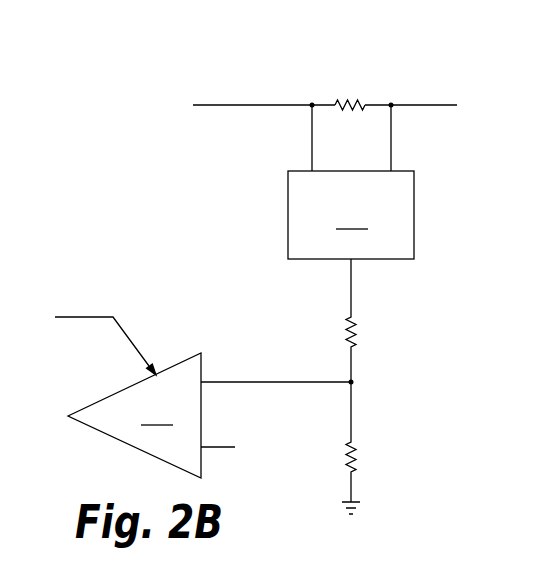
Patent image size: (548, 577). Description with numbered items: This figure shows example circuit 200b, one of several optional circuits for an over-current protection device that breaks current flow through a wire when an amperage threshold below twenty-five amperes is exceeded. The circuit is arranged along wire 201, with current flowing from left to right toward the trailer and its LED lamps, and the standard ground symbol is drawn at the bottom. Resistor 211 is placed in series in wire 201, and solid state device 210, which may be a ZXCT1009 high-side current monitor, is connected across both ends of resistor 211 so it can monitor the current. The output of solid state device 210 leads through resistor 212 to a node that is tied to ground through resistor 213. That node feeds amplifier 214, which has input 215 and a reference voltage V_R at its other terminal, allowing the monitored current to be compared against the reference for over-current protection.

The circuit 200b is at (170, 46).
The wire 201 is at (440, 103).
The solid state device 210 is at (351, 182).
The resistor 211 is at (345, 84).
The resistor 212 is at (384, 331).
The resistor 213 is at (376, 459).
The amplifier 214 is at (211, 415).
The input 215 is at (87, 300).